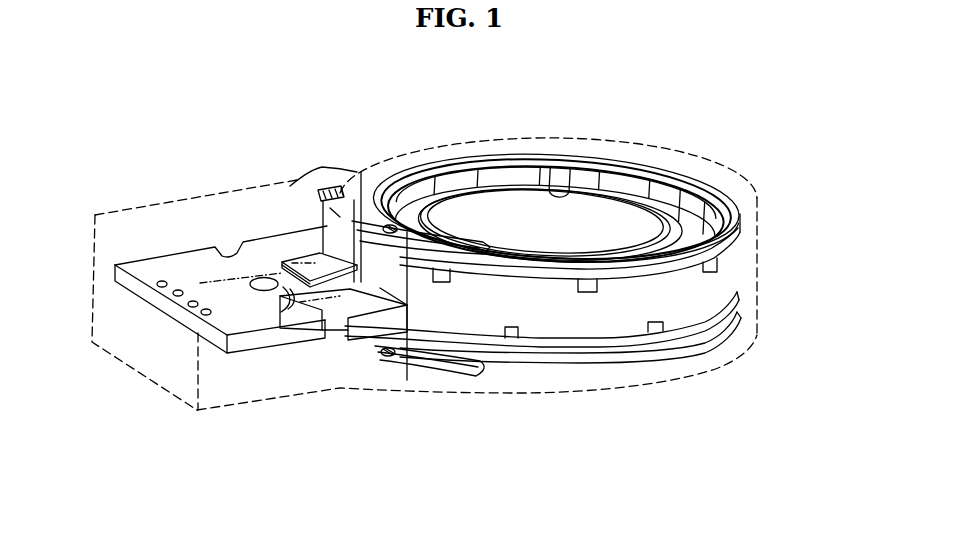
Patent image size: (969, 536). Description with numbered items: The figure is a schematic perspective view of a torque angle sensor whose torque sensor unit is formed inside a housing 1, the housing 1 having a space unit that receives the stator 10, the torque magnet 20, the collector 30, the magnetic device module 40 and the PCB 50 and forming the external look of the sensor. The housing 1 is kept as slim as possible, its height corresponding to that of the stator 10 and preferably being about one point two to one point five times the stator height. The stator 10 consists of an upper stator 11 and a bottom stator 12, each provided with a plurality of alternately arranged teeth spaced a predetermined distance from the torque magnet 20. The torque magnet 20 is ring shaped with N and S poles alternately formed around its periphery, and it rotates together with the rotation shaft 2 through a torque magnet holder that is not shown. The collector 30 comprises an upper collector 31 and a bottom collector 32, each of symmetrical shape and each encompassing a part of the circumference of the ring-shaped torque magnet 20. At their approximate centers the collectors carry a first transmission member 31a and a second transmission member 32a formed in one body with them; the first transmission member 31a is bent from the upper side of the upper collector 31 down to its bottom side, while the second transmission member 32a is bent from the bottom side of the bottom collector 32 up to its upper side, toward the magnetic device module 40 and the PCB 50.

The housing 1 is at (652, 150).
The rotation shaft 2 is at (560, 188).
The stator 10 is at (822, 327).
The upper stator 11 is at (593, 180).
The bottom stator 12 is at (738, 320).
The torque magnet 20 is at (498, 178).
The collector 30 is at (366, 264).
The upper collector 31 is at (360, 172).
The first transmission member 31a is at (308, 257).
The bottom collector 32 is at (447, 372).
The second transmission member 32a is at (342, 345).
The magnetic device module 40 is at (283, 291).
The PCB 50 is at (128, 261).